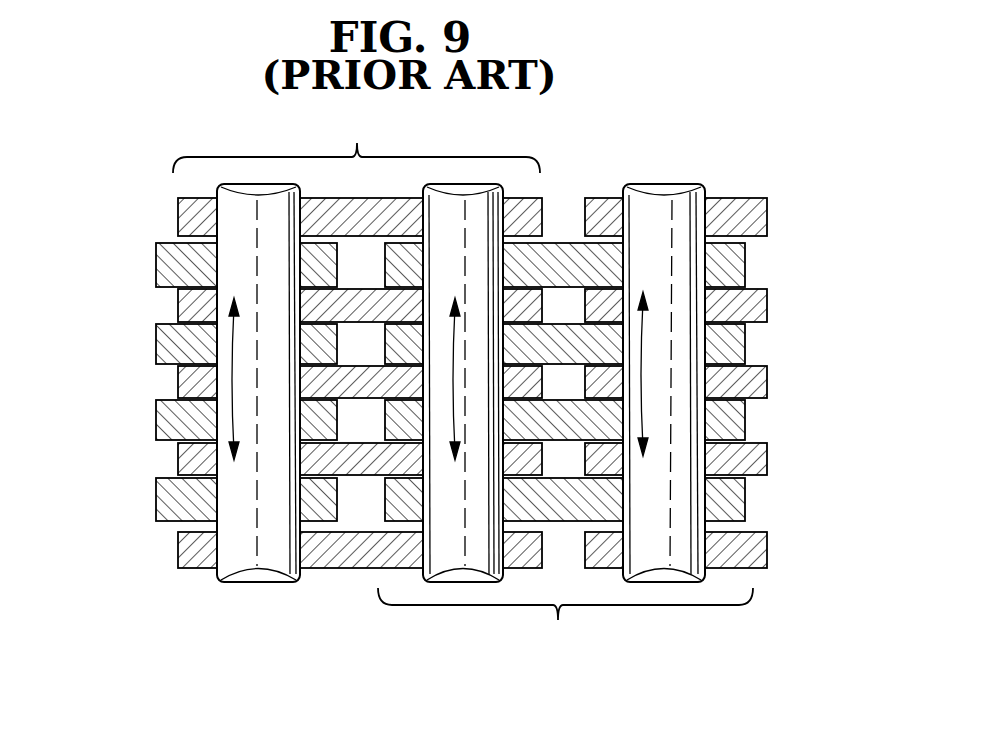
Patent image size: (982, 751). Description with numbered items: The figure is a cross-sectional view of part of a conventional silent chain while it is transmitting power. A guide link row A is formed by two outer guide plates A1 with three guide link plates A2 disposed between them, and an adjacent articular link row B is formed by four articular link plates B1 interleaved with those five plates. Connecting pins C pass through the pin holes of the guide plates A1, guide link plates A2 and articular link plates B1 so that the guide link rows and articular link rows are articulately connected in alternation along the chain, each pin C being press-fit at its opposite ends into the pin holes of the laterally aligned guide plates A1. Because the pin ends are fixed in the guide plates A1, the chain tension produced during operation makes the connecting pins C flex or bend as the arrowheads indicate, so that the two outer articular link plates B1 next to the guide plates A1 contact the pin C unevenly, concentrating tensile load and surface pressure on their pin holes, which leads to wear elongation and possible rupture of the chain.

The guide plate A1 is at (178, 211).
The articular link plate B1 is at (160, 262).
The guide link plate A2 is at (178, 302).
The connecting pin C is at (236, 566).
The guide link row A is at (356, 146).
The articular link row B is at (565, 617).